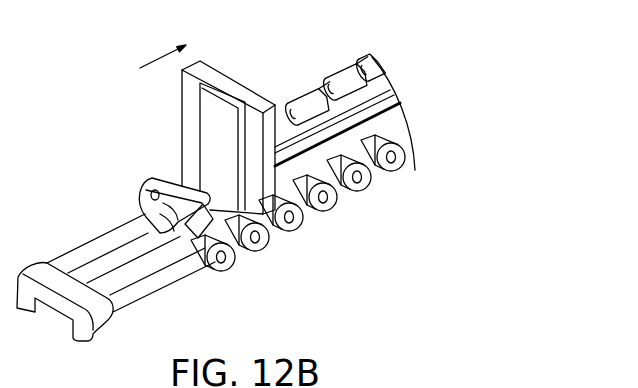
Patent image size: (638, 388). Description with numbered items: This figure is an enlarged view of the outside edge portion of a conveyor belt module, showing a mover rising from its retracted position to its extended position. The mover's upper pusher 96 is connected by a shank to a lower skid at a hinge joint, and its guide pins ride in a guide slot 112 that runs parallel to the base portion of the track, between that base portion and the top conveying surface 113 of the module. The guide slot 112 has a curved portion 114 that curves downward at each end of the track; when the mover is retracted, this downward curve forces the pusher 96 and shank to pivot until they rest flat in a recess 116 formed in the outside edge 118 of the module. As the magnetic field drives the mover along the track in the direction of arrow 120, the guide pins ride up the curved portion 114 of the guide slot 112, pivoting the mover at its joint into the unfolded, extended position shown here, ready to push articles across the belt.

The pusher 96 is at (182, 125).
The guide slot 112 is at (203, 205).
The top conveying surface 113 is at (353, 100).
The curved portion 114 is at (182, 222).
The recess 116 is at (110, 227).
The outside edge 118 is at (114, 325).
The arrow 120 is at (158, 58).